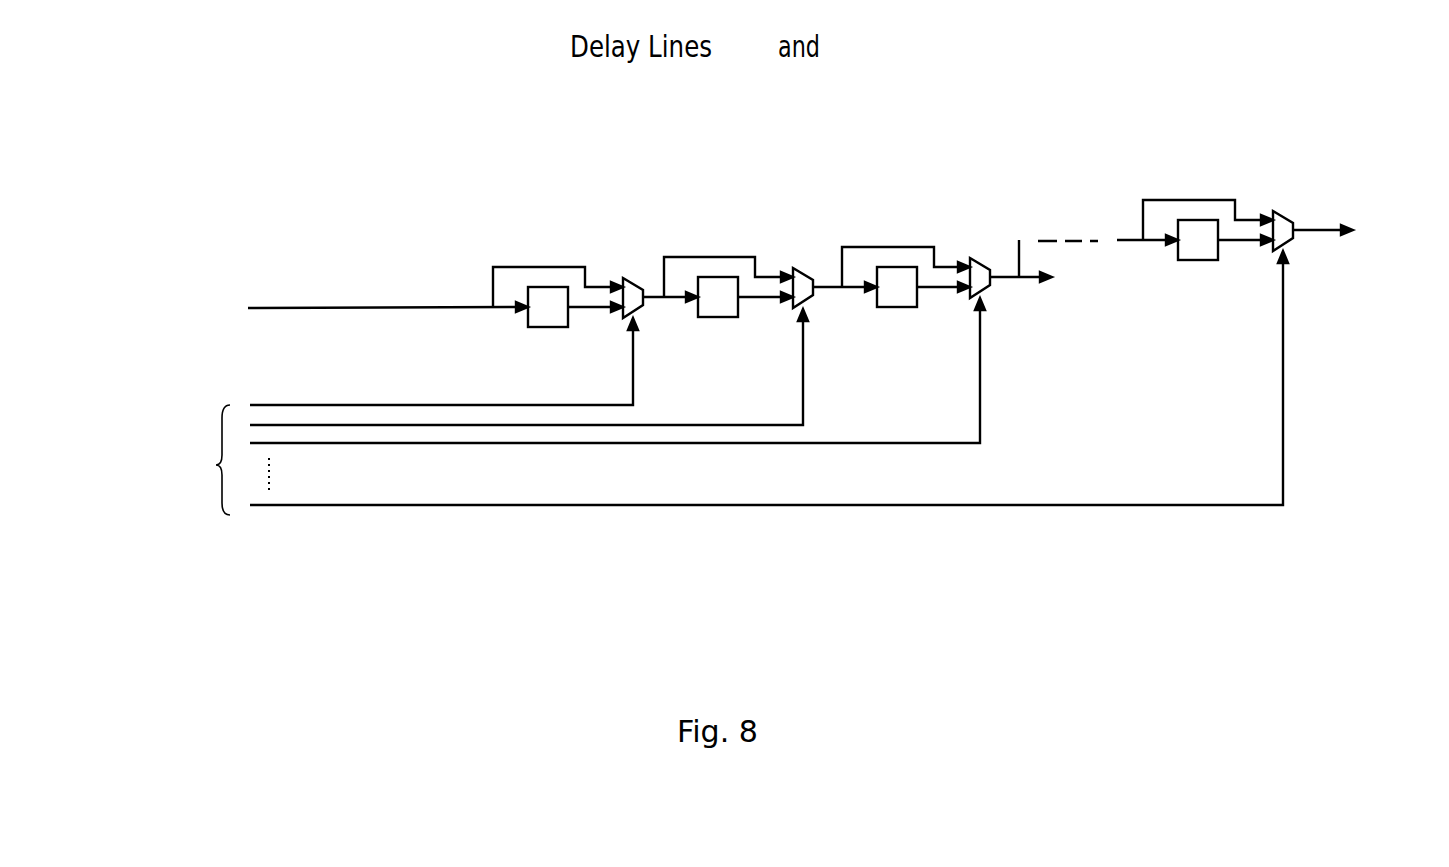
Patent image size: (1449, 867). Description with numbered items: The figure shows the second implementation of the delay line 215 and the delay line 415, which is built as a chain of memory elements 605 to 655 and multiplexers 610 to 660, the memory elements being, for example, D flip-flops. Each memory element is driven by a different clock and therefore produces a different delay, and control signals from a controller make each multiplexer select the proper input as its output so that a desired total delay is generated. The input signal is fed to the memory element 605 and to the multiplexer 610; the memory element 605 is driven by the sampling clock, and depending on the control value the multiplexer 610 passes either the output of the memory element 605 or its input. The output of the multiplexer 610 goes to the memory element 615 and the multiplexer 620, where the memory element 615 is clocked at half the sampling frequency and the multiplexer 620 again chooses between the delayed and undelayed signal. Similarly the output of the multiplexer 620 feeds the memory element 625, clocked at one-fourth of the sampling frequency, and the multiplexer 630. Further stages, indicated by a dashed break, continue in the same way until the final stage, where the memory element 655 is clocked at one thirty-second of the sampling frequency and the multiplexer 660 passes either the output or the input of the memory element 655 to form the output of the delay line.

The delay line 215 is at (767, 63).
The delay line 415 is at (875, 63).
The memory element 605 is at (547, 327).
The multiplexer 610 is at (627, 278).
The memory element 615 is at (718, 317).
The multiplexer 620 is at (822, 240).
The memory element 625 is at (898, 307).
The multiplexer 630 is at (997, 233).
The memory element 655 is at (1198, 260).
The multiplexer 660 is at (1303, 187).